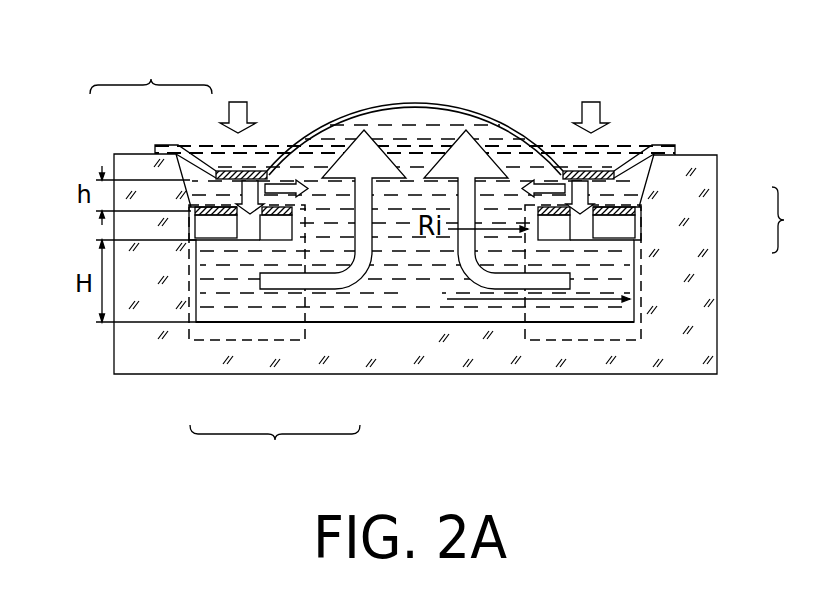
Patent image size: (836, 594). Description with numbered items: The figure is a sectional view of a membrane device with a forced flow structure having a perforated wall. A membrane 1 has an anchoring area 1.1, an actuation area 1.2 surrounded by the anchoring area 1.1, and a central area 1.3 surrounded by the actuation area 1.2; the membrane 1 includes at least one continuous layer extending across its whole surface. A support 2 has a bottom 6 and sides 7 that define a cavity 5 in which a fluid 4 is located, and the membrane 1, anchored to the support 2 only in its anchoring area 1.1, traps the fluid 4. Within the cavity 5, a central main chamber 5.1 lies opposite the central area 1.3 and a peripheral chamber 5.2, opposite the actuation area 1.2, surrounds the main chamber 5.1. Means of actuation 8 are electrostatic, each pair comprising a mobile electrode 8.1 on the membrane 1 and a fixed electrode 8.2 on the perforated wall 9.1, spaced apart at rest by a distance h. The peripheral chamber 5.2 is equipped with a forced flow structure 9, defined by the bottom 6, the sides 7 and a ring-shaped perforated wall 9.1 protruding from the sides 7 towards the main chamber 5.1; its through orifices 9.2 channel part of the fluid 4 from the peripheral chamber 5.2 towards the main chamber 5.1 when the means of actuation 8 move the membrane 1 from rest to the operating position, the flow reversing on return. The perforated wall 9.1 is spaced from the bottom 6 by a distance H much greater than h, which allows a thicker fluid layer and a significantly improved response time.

The membrane 1 is at (386, 103).
The anchoring area 1.1 is at (672, 147).
The actuation area 1.2 is at (575, 168).
The central area 1.3 is at (422, 104).
The support 2 is at (695, 352).
The fluid 4 is at (450, 310).
The cavity 5 is at (275, 446).
The main chamber 5.1 is at (357, 308).
The peripheral chamber 5.2 is at (237, 308).
The bottom 6 is at (540, 355).
The sides 7 is at (634, 308).
The means of actuation 8 is at (151, 73).
The mobile electrode 8.1 is at (207, 163).
The fixed electrode 8.2 is at (208, 207).
The forced flow structure 9 is at (787, 220).
The perforated wall 9.1 is at (623, 230).
The through orifice 9.2 is at (581, 230).